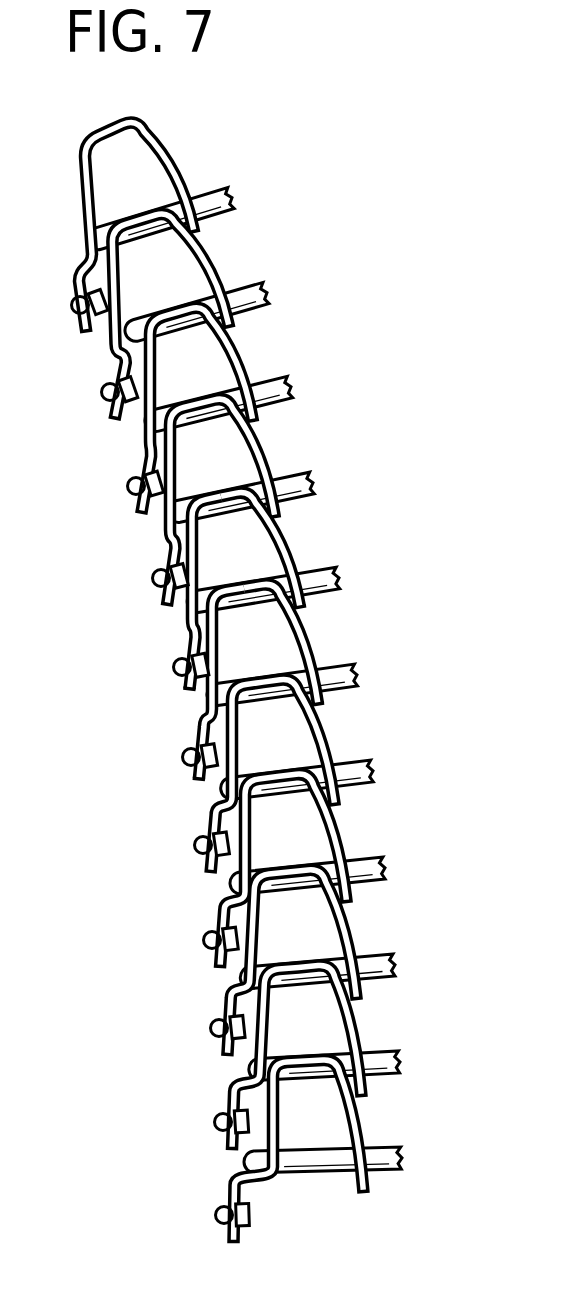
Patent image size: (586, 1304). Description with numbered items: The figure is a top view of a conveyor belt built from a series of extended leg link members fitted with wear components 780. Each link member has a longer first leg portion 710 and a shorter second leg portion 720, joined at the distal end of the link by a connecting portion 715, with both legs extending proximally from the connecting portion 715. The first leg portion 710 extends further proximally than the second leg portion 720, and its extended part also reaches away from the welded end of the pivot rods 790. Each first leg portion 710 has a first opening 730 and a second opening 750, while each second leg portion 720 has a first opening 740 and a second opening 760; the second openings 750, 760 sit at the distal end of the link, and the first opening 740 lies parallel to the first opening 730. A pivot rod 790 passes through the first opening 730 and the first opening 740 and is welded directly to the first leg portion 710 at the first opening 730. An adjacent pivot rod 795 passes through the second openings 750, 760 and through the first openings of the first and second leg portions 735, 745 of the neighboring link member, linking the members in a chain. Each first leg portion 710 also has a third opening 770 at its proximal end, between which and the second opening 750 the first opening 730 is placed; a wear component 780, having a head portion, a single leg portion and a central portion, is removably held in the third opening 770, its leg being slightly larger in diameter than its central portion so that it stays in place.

The first leg portion 710 is at (167, 562).
The connecting portion 715 is at (244, 587).
The second leg portion 720 is at (290, 546).
The first opening of first leg portion 730 is at (213, 662).
The first opening of first leg portion of adjacent link member 735 is at (192, 614).
The first opening of second leg portion 740 is at (332, 654).
The first opening of second leg portion of adjacent link member 745 is at (340, 590).
The second opening of first leg portion 750 is at (198, 603).
The second opening of second leg portion 760 is at (341, 569).
The third opening 770 is at (196, 775).
The wear component 780 is at (165, 667).
The pivot rod 790 is at (347, 698).
The adjacent pivot rod 795 is at (317, 607).